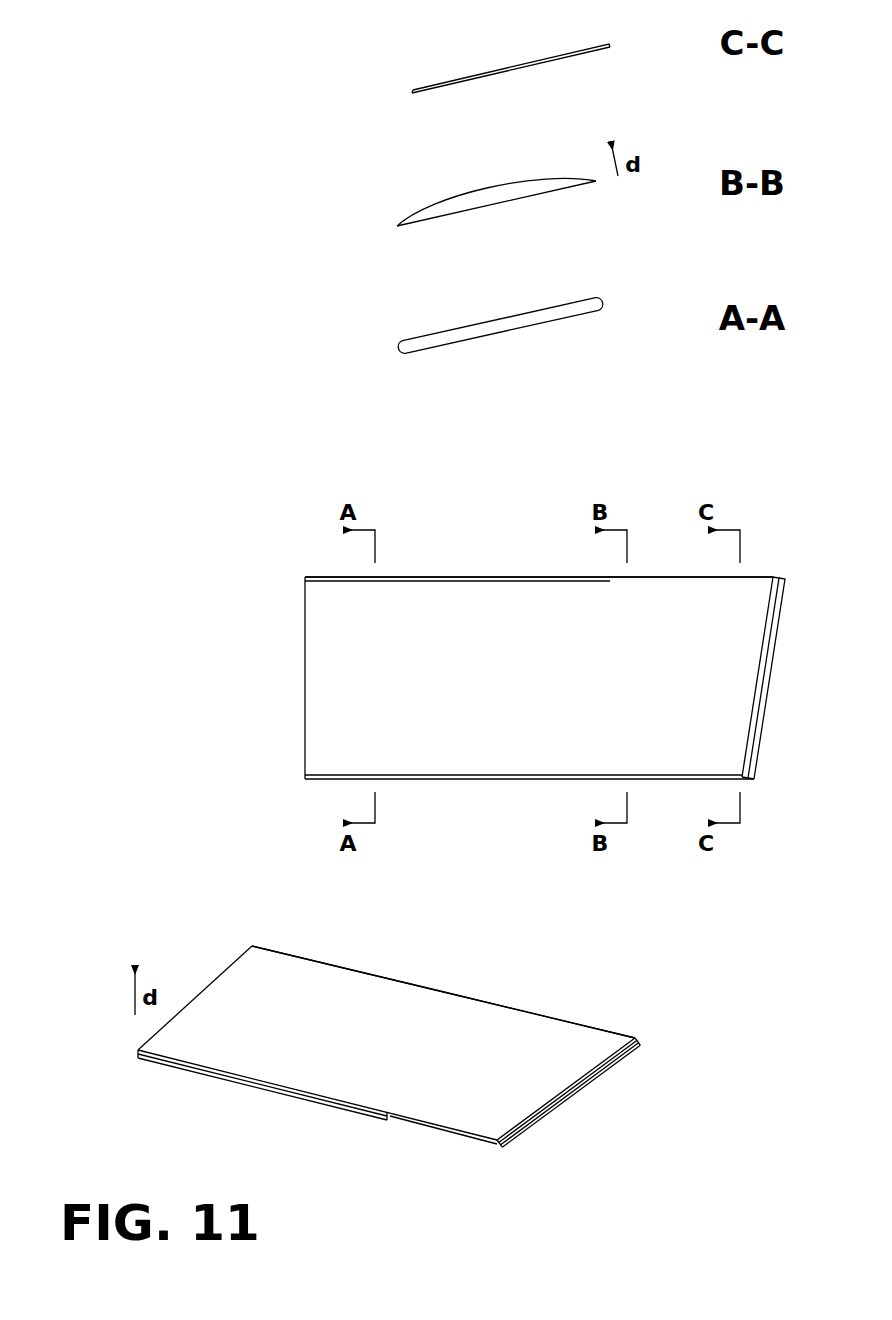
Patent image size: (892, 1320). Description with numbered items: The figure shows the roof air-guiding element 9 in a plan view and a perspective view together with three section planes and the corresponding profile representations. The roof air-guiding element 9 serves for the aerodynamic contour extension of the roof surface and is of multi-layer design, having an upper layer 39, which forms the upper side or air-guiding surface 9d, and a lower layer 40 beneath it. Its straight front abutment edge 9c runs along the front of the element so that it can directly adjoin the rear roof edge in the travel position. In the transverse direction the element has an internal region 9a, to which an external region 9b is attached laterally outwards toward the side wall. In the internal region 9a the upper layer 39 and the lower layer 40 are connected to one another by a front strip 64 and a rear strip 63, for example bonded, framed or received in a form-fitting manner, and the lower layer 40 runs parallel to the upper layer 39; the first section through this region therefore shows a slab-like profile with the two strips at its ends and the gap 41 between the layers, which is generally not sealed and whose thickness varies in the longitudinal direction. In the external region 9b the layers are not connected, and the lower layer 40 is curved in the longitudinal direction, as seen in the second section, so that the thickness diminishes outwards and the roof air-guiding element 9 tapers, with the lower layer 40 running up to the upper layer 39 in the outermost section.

The roof air-guiding element 9 is at (412, 92).
The internal region 9a is at (473, 597).
The external region 9b is at (697, 597).
The front abutment edge 9c is at (547, 577).
The air-guiding surface 9d is at (325, 660).
The upper layer 39 is at (523, 72).
The lower layer 40 is at (474, 74).
The gap 41 is at (463, 335).
The rear strip 63 is at (600, 302).
The front strip 64 is at (400, 350).